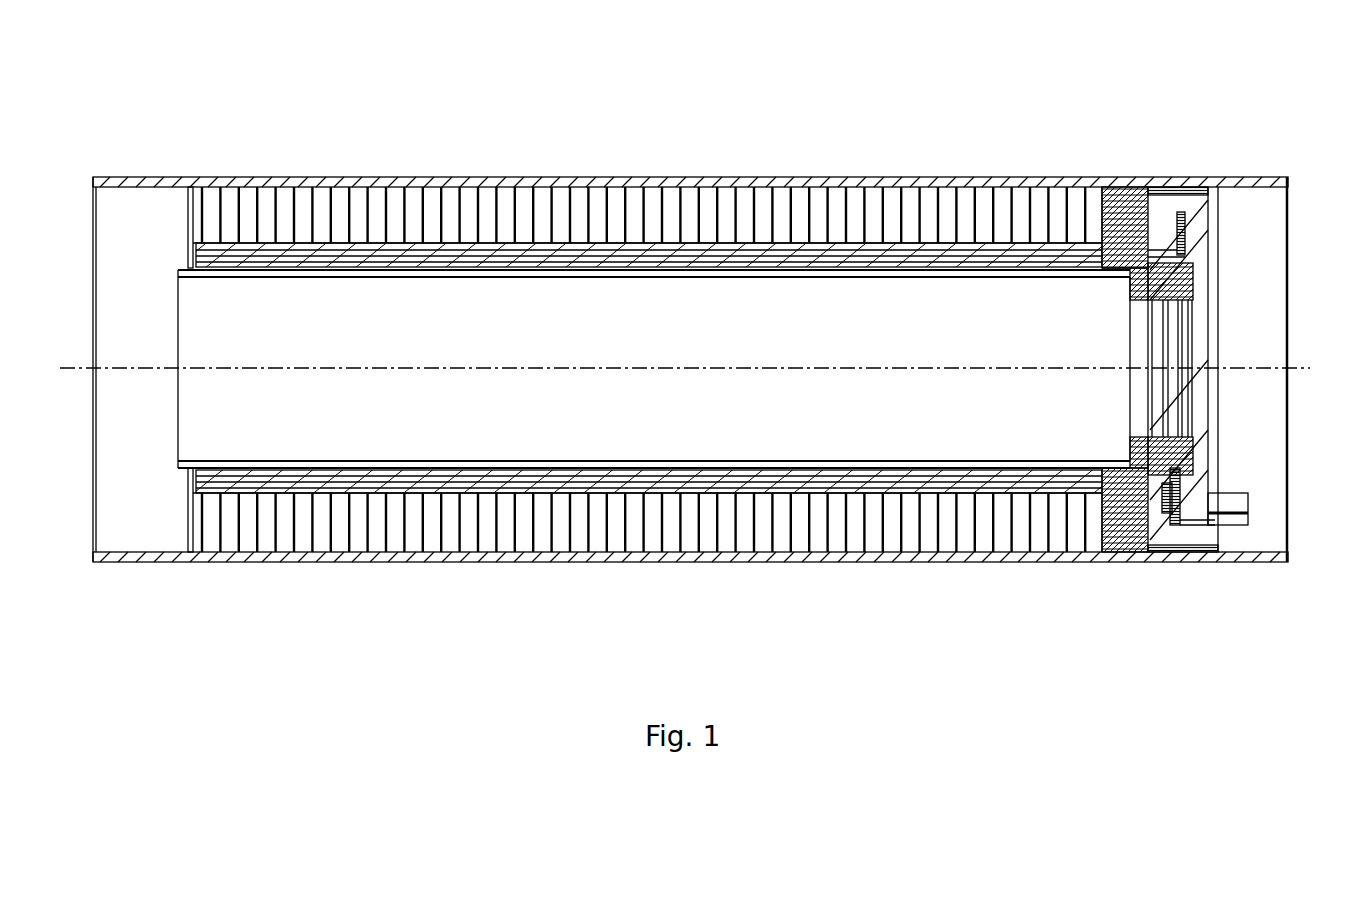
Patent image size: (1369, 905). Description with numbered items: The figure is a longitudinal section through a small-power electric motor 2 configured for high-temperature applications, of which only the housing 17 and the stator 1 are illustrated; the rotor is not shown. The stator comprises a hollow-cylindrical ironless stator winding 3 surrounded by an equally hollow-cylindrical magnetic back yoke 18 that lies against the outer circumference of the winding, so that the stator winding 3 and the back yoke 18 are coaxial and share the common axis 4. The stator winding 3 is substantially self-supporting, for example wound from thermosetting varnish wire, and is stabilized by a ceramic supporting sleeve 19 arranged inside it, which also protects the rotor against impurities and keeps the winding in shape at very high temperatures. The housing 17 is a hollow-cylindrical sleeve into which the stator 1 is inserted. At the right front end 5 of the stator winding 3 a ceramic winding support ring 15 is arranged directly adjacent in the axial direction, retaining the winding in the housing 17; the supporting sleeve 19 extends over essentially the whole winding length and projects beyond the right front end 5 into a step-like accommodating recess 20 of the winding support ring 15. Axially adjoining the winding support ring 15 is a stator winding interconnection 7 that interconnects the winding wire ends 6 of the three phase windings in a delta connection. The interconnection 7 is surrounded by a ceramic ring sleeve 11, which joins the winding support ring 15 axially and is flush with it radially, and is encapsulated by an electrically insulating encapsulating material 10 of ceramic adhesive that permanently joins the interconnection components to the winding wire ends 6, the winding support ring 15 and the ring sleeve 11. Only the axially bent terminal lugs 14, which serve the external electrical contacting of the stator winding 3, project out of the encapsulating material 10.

The stator 1 is at (452, 200).
The electric motor 2 is at (624, 122).
The stator winding 3 is at (660, 468).
The axis 4 is at (302, 367).
The right front end 5 is at (1122, 210).
The winding wire ends 6 is at (1187, 225).
The stator winding interconnection 7 is at (1200, 285).
The encapsulating material 10 is at (1192, 200).
The ring sleeve 11 is at (1190, 553).
The terminal lug 14 is at (1243, 502).
The winding support ring 15 is at (1128, 530).
The housing 17 is at (232, 178).
The back yoke 18 is at (342, 195).
The supporting sleeve 19 is at (538, 270).
The accommodating recess 20 is at (1118, 290).